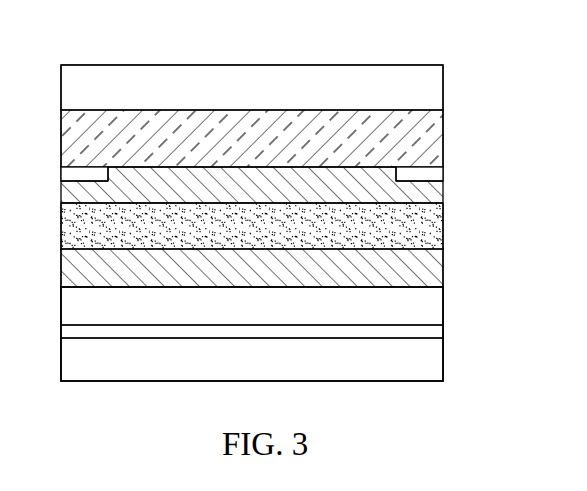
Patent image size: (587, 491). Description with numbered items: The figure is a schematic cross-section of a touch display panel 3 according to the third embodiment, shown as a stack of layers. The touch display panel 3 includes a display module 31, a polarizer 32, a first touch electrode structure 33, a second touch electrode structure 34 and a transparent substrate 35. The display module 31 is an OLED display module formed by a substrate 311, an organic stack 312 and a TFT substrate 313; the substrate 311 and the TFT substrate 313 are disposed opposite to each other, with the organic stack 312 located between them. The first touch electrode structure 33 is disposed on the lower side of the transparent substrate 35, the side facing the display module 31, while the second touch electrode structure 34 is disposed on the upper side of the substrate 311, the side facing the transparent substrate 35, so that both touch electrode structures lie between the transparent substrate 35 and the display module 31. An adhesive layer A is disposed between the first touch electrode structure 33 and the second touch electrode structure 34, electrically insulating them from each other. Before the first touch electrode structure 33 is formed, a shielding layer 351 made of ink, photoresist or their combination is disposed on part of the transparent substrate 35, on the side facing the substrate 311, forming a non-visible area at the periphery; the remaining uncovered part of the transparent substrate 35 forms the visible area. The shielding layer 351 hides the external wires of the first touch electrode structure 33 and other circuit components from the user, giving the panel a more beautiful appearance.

The touch display panel 3 is at (104, 41).
The display module 31 is at (507, 290).
The substrate 311 is at (427, 308).
The organic stack 312 is at (435, 333).
The TFT substrate 313 is at (427, 364).
The polarizer 32 is at (427, 93).
The first touch electrode structure 33 is at (432, 198).
The second touch electrode structure 34 is at (433, 270).
The transparent substrate 35 is at (427, 136).
The shielding layer 351 is at (430, 174).
The adhesive layer A is at (433, 231).